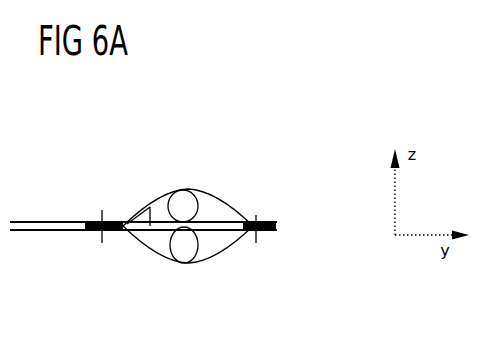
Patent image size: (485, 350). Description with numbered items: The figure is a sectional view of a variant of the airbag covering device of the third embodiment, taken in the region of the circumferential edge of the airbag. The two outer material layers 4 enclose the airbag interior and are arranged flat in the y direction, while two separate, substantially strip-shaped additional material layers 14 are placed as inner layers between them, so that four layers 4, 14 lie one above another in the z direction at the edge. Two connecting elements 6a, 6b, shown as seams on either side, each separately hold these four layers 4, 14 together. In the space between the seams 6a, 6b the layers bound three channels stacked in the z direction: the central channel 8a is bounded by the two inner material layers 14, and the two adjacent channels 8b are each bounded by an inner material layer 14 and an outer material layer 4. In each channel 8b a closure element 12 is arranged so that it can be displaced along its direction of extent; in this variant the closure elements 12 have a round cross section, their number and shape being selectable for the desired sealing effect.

The material layer 4 is at (37, 221).
The connecting element 6a is at (102, 243).
The connecting element 6b is at (256, 243).
The channel 8a is at (226, 212).
The channel 8b is at (165, 191).
The closure element 12 is at (195, 193).
The additional material layer 14 is at (147, 213).